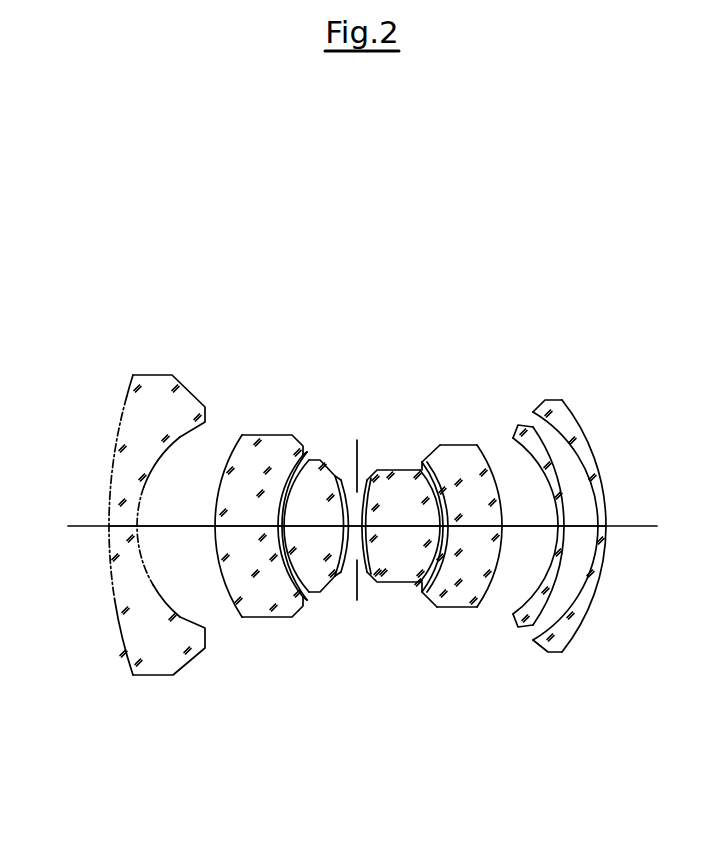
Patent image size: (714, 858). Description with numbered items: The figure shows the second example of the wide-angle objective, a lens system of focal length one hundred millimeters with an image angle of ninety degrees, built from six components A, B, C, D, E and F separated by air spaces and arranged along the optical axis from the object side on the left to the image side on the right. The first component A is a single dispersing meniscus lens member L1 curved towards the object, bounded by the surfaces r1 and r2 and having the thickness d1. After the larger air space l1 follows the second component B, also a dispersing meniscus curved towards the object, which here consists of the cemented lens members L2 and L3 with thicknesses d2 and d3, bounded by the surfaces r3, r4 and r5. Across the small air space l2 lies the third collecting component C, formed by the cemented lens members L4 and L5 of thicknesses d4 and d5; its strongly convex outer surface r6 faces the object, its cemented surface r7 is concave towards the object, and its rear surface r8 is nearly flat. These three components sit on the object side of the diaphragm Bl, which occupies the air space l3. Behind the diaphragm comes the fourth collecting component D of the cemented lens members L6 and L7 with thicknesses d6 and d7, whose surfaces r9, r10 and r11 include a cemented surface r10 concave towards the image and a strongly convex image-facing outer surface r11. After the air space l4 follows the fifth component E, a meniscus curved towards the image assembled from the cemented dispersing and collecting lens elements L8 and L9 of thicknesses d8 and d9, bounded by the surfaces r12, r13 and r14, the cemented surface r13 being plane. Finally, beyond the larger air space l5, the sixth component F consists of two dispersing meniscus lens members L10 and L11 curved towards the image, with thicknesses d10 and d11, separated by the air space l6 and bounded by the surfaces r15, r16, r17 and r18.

The first lens component A is at (43, 146).
The second lens component B is at (102, 148).
The third lens component C is at (303, 148).
The fourth lens component D is at (425, 148).
The fifth lens component E is at (541, 148).
The sixth lens component F is at (696, 150).
The dispersing meniscus lens member L1 is at (40, 212).
The lens member L2 is at (122, 212).
The lens member L3 is at (163, 212).
The lens member L4 is at (247, 212).
The lens member L5 is at (283, 212).
The lens member L6 is at (363, 212).
The lens member L7 is at (400, 212).
The lens element L8 is at (481, 212).
The lens element L9 is at (521, 212).
The dispersing meniscus lens member L10 is at (599, 212).
The dispersing meniscus lens member L11 is at (679, 212).
The lens thickness d1 is at (127, 526).
The lens thickness d2 is at (245, 526).
The lens thickness d3 is at (275, 526).
The lens thickness d4 is at (315, 526).
The lens thickness d5 is at (345, 526).
The lens thickness d6 is at (365, 470).
The lens thickness d7 is at (401, 526).
The lens thickness d8 is at (448, 526).
The lens thickness d9 is at (477, 526).
The lens thickness d10 is at (562, 526).
The lens thickness d11 is at (602, 526).
The air space l1 is at (180, 526).
The air space l2 is at (282, 526).
The air space l3 is at (353, 526).
The air space l4 is at (441, 526).
The air space l5 is at (530, 526).
The air space l6 is at (580, 526).
The diaphragm Bl is at (357, 440).
The radius of curvature r1 is at (125, 653).
The radius of curvature r2 is at (184, 618).
The radius of curvature r3 is at (230, 595).
The radius of curvature r4 is at (268, 590).
The radius of curvature r5 is at (292, 572).
The radius of curvature r6 is at (310, 592).
The radius of curvature r7 is at (324, 592).
The radius of curvature r8 is at (344, 588).
The radius of curvature r9 is at (365, 577).
The radius of curvature r10 is at (372, 580).
The radius of curvature r11 is at (410, 584).
The radius of curvature r12 is at (430, 593).
The radius of curvature r13 is at (463, 607).
The radius of curvature r14 is at (488, 604).
The radius of curvature r15 is at (523, 626).
The radius of curvature r16 is at (540, 618).
The radius of curvature r17 is at (562, 620).
The radius of curvature r18 is at (582, 634).